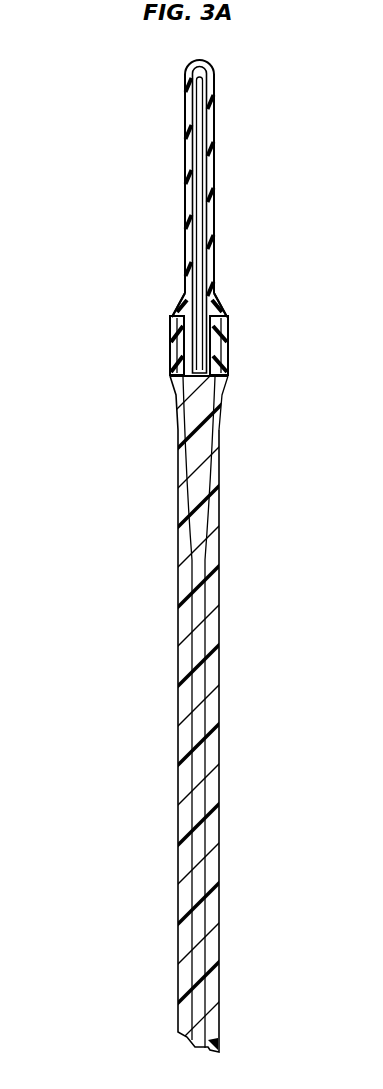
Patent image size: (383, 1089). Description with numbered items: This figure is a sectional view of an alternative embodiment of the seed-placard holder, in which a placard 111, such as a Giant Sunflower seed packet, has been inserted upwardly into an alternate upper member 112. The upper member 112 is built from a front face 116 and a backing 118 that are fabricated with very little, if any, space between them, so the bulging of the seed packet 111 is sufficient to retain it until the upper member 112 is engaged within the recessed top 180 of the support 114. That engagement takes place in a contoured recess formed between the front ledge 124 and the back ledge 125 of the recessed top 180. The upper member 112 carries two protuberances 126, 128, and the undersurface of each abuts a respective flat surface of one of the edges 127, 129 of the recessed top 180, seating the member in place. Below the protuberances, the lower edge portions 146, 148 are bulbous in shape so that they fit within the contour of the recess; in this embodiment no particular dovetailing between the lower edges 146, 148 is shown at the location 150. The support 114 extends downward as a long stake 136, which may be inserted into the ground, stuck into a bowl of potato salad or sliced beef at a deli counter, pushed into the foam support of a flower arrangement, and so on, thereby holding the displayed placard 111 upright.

The upper member 112 is at (114, 86).
The placard 111 is at (205, 98).
The backing 118 is at (184, 162).
The front face 116 is at (214, 158).
The protuberance 128 is at (174, 313).
The protuberance 126 is at (220, 305).
The edge 129 is at (163, 317).
The edge 127 is at (236, 312).
The back ledge 125 is at (170, 336).
The front ledge 124 is at (228, 338).
The lower edge portion 148 is at (170, 353).
The lower edge portion 146 is at (228, 374).
The recessed top 180 is at (243, 381).
The support 114 is at (146, 426).
The junction of lower edges 150 is at (210, 420).
The stake 136 is at (177, 588).